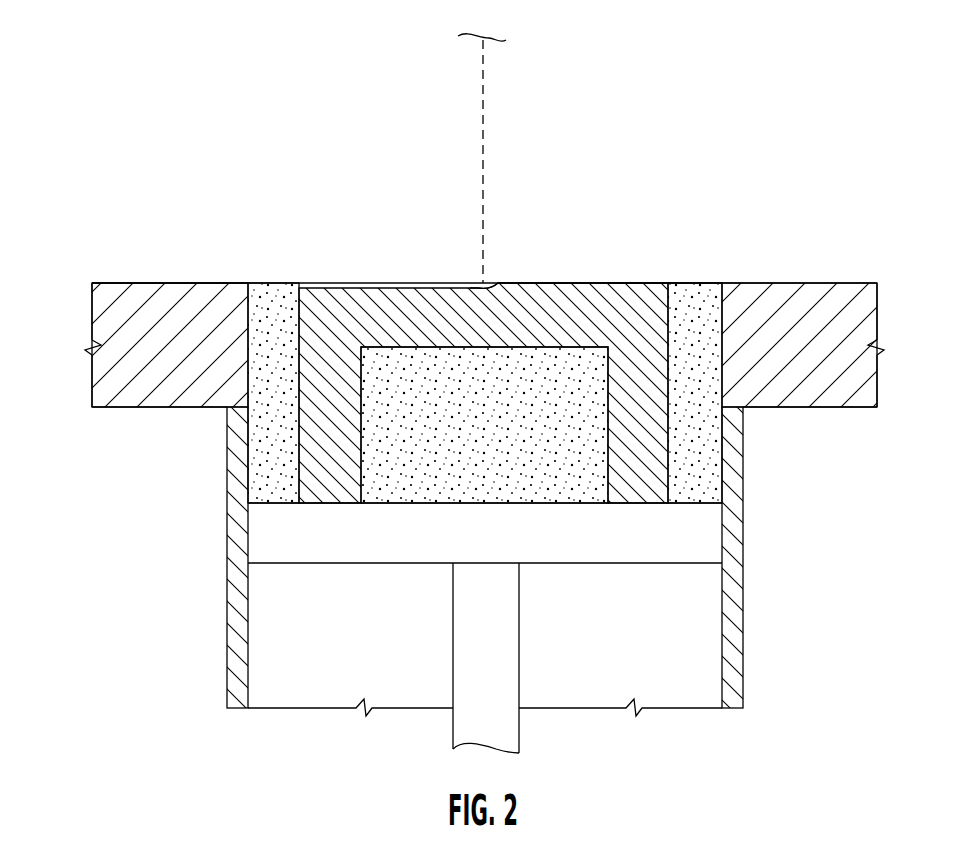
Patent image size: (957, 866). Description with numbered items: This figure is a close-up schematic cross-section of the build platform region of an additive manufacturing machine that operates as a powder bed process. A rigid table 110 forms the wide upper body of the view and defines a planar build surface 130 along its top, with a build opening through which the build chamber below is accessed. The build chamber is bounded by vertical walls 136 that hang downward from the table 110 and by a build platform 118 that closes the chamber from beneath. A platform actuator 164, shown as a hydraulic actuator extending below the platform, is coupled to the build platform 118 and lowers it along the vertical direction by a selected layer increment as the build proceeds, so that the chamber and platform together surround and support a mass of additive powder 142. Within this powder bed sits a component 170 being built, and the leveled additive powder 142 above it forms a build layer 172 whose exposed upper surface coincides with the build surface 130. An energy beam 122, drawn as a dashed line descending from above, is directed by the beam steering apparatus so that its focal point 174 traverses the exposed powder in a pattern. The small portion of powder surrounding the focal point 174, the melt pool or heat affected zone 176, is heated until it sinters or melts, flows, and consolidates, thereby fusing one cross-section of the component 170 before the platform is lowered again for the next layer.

The table 110 is at (113, 362).
The build platform 118 is at (488, 543).
The energy beam 122 is at (482, 73).
The planar build surface 130 is at (104, 282).
The vertical walls 136 is at (738, 535).
The additive powder 142 is at (709, 430).
The platform actuator 164 is at (519, 653).
The component 170 is at (655, 282).
The build layer 172 is at (337, 287).
The focal point 174 is at (483, 281).
The melt pool 176 is at (486, 289).